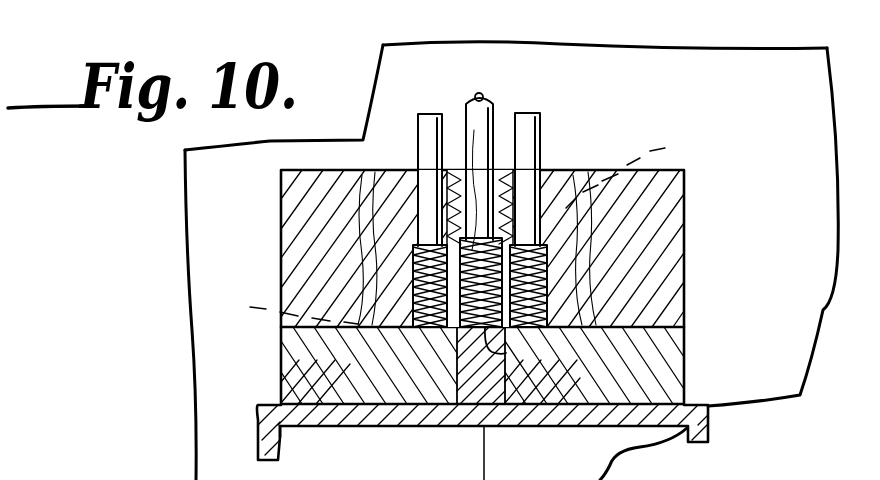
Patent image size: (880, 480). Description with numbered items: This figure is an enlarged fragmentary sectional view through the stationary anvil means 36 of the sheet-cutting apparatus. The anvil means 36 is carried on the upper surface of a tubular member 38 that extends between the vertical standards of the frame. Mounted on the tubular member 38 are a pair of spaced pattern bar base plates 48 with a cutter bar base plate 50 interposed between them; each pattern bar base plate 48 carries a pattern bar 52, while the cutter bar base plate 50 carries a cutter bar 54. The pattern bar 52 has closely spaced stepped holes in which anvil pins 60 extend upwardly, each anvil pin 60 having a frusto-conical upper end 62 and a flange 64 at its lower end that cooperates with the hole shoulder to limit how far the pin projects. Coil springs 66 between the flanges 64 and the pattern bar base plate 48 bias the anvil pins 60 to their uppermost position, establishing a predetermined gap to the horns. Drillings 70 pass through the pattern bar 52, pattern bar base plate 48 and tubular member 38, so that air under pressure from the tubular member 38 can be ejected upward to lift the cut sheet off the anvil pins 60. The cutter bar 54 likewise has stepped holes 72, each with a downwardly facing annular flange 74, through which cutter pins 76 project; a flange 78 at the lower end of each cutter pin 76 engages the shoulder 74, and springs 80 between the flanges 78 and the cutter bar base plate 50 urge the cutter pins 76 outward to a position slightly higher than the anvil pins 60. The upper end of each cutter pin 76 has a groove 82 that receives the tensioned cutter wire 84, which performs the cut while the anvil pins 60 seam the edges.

The anvil means 36 is at (498, 287).
The tubular member 38 is at (303, 428).
The pattern bar base plate 48 is at (281, 352).
The cutter bar base plate 50 is at (464, 420).
The pattern bar 52 is at (687, 204).
The cutter bar 54 is at (488, 240).
The anvil pin 60 is at (417, 148).
The frusto-conical upper end 62 is at (418, 116).
The flange 64 is at (417, 247).
The coil spring 66 is at (413, 278).
The drilling 70 is at (461, 225).
The stepped hole 72 is at (504, 184).
The annular flange 74 is at (481, 259).
The cutter pin 76 is at (466, 112).
The flange 78 is at (507, 354).
The spring 80 is at (401, 376).
The groove 82 is at (482, 94).
The cutter wire 84 is at (475, 94).